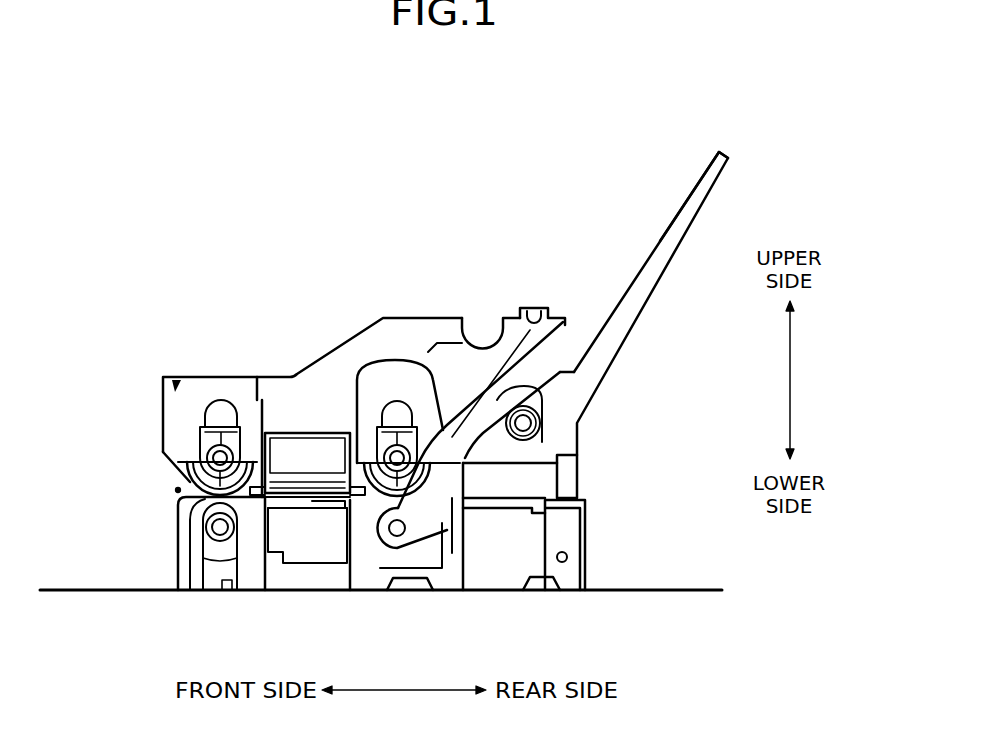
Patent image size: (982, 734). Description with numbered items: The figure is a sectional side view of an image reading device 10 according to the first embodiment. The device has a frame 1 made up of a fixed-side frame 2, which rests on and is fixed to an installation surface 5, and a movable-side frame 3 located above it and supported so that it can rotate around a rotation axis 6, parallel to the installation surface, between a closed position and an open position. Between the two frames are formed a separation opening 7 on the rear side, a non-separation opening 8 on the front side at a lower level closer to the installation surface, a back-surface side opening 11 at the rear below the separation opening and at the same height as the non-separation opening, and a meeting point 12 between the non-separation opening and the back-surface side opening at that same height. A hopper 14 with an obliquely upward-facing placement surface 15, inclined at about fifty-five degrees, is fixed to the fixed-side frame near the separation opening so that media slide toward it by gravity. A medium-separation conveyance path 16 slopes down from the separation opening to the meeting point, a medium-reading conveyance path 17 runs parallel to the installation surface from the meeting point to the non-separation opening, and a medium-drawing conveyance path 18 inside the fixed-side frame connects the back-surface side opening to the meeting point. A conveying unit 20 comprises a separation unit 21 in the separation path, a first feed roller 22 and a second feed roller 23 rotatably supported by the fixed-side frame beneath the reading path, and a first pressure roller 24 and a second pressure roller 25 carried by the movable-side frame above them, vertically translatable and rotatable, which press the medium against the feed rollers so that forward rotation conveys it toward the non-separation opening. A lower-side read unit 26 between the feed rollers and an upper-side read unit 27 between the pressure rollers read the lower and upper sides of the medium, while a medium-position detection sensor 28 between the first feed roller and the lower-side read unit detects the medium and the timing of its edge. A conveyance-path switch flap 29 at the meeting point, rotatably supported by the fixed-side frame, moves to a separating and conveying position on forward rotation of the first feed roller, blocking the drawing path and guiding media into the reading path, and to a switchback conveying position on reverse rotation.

The frame 1 is at (132, 366).
The fixed-side frame 2 is at (202, 585).
The movable-side frame 3 is at (343, 373).
The installation surface 5 is at (671, 589).
The rotation axis 6 is at (176, 491).
The separation opening 7 is at (553, 362).
The non-separation opening 8 is at (189, 482).
The image reading device 10 is at (601, 128).
The back-surface side opening 11 is at (565, 497).
The meeting point 12 is at (403, 373).
The hopper 14 is at (646, 303).
The placement surface 15 is at (672, 217).
The medium-separation conveyance path 16 is at (472, 426).
The medium-reading conveyance path 17 is at (249, 478).
The medium-drawing conveyance path 18 is at (512, 485).
The conveying unit 20 is at (474, 553).
The separation unit 21 is at (522, 392).
The first feed roller 22 is at (400, 556).
The second feed roller 23 is at (222, 562).
The first pressure roller 24 is at (401, 392).
The second pressure roller 25 is at (218, 417).
The lower-side read unit 26 is at (297, 556).
The upper-side read unit 27 is at (313, 432).
The medium-position detection sensor 28 is at (342, 524).
The conveyance-path switch flap 29 is at (440, 572).